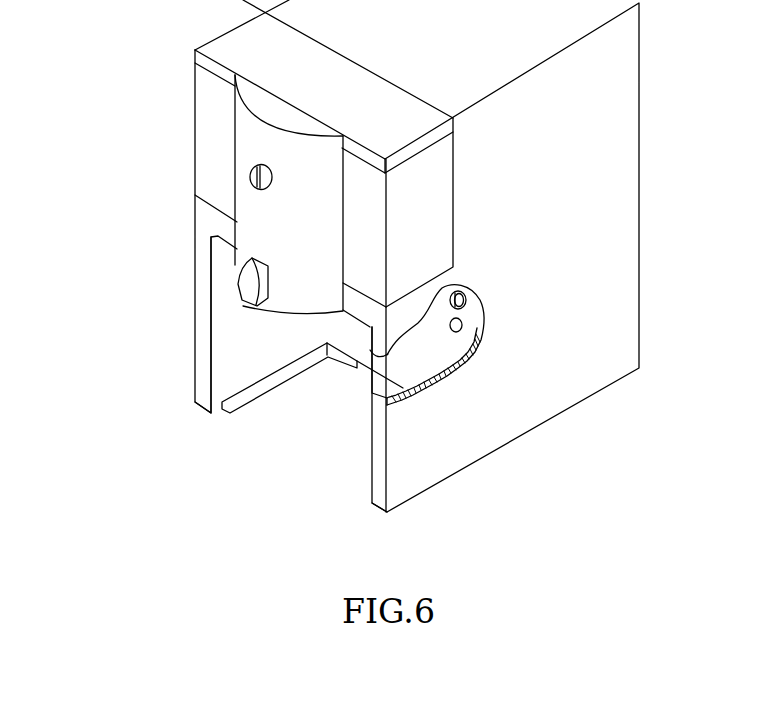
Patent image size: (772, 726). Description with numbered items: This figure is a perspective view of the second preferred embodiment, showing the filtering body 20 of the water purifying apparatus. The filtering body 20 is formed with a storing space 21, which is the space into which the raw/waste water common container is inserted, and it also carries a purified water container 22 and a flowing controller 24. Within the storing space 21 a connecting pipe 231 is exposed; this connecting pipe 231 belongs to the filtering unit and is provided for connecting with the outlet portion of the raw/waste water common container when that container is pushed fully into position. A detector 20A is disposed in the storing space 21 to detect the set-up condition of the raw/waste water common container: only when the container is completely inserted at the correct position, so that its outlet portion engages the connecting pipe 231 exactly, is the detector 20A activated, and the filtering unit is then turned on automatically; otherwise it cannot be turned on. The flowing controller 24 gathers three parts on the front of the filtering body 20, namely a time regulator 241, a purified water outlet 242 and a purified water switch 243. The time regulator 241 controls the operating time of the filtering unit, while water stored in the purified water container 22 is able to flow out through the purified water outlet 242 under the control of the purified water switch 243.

The filtering body 20 is at (643, 63).
The detector 20A is at (463, 298).
The storing space 21 is at (273, 353).
The purified water container 22 is at (428, 205).
The connecting pipe 231 is at (462, 326).
The flowing controller 24 is at (70, 195).
The time regulator 241 is at (252, 175).
The purified water outlet 242 is at (243, 307).
The purified water switch 243 is at (250, 277).